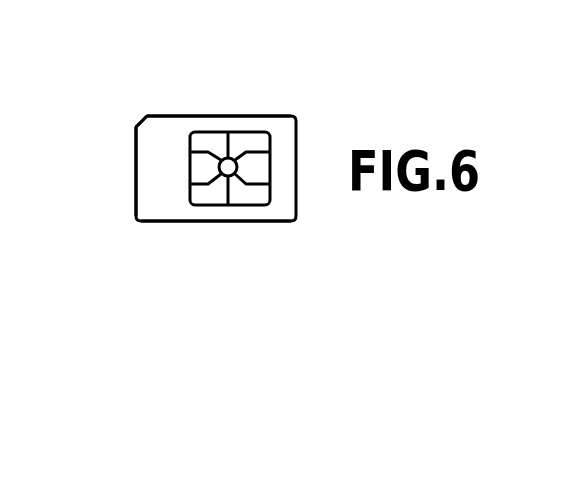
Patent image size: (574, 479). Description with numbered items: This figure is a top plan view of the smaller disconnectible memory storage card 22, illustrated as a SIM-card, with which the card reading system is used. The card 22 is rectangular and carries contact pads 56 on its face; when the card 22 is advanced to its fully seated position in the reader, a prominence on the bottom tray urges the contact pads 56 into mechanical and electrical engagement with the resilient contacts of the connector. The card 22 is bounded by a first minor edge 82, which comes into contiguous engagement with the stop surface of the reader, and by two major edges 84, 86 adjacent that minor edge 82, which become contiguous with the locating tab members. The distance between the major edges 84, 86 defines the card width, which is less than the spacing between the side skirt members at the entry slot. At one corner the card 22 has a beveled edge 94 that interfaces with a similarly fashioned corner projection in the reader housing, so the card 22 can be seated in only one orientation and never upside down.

The memory storage card 22 is at (169, 90).
The contact pads 56 is at (236, 152).
The first minor edge 82 is at (135, 165).
The major edge 84 is at (265, 222).
The major edge 86 is at (220, 116).
The beveled edge 94 is at (142, 122).